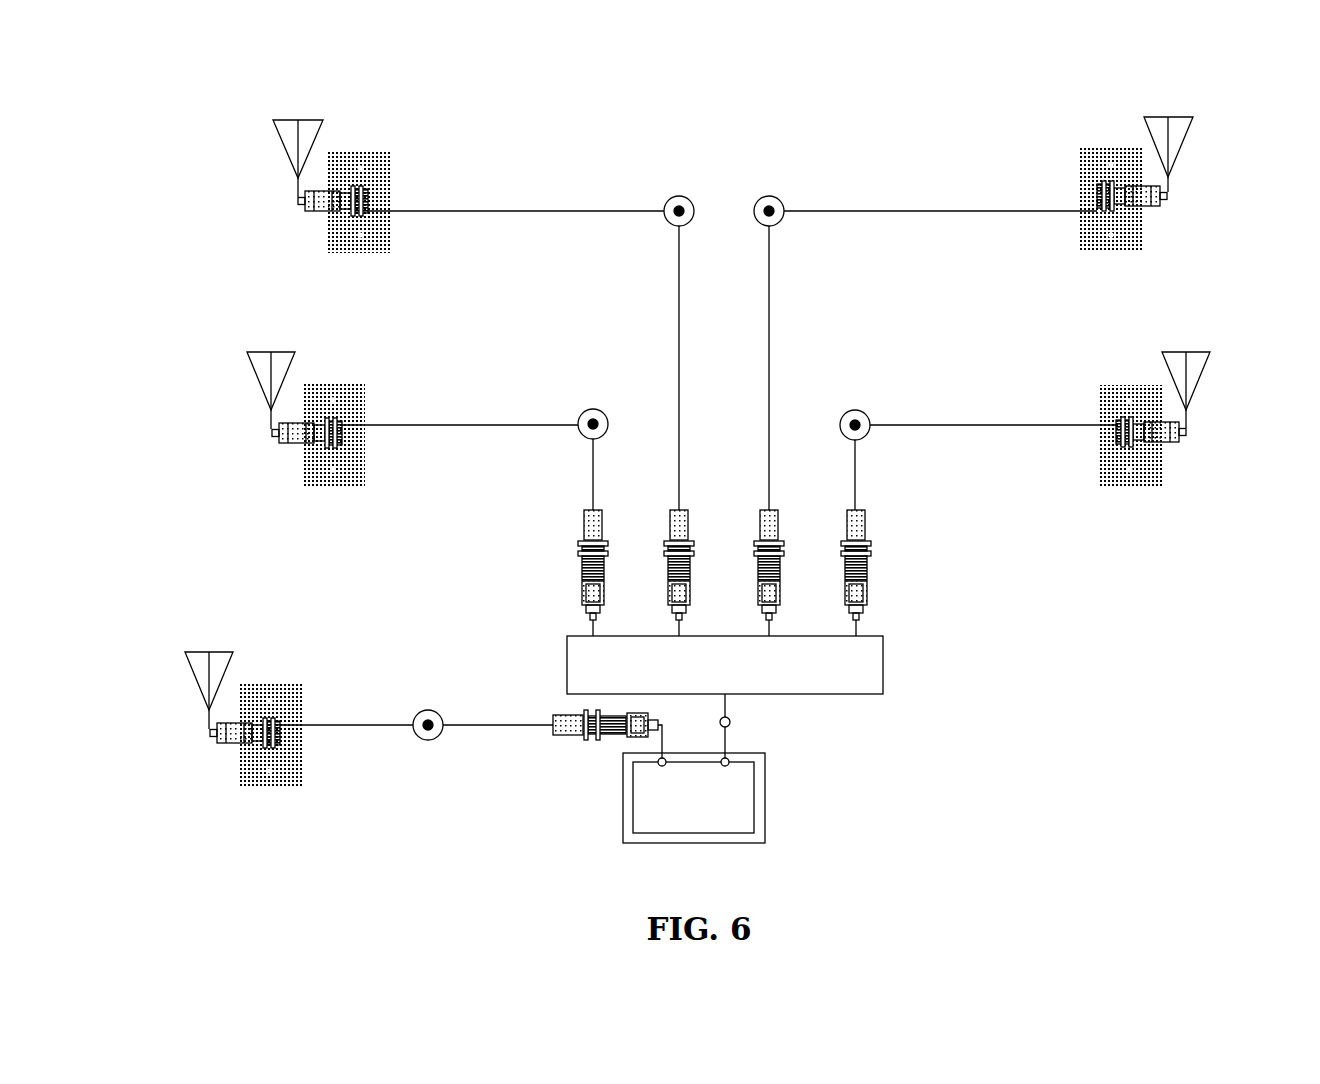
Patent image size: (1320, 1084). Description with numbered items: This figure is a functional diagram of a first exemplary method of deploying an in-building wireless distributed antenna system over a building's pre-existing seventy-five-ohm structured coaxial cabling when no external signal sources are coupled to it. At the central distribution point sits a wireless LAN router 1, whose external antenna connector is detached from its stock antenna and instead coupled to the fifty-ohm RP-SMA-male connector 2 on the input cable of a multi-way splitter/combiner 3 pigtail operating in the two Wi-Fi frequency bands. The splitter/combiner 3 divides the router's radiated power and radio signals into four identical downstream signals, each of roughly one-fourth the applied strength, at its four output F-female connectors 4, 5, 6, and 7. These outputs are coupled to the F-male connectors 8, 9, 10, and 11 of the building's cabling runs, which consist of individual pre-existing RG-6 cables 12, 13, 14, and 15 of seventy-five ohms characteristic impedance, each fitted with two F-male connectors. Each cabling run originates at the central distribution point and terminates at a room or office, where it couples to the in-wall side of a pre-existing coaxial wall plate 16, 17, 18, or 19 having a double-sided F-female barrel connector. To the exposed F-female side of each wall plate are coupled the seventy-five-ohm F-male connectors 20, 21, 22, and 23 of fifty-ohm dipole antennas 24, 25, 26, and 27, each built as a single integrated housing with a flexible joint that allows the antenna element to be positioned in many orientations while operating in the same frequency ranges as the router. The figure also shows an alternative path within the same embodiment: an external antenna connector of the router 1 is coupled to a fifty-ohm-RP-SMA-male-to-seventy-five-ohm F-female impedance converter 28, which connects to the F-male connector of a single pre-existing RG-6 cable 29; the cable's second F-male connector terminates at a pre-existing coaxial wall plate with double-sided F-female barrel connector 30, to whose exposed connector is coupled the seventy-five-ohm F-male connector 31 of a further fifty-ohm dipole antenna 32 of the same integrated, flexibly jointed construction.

The wireless LAN router 1 is at (697, 853).
The RP-SMA-male connector 2 is at (748, 730).
The multi-way splitter/combiner 3 is at (553, 660).
The output F-female connector 4 is at (575, 622).
The output F-female connector 5 is at (665, 622).
The output F-female connector 6 is at (752, 622).
The output F-female connector 7 is at (838, 622).
The F-male connector 8 is at (567, 540).
The F-male connector 9 is at (653, 540).
The F-male connector 10 is at (753, 545).
The F-male connector 11 is at (833, 543).
The RG-6 cable 12 is at (555, 412).
The RG-6 cable 13 is at (640, 190).
The RG-6 cable 14 is at (823, 190).
The RG-6 cable 15 is at (905, 410).
The coaxial wall plate 16 is at (368, 382).
The coaxial wall plate 17 is at (395, 145).
The coaxial wall plate 18 is at (1068, 145).
The coaxial wall plate 19 is at (1088, 392).
The F-male connector 20 is at (280, 460).
The F-male connector 21 is at (310, 225).
The F-male connector 22 is at (1160, 222).
The F-male connector 23 is at (1175, 452).
The dipole antenna 24 is at (258, 338).
The dipole antenna 25 is at (290, 112).
The dipole antenna 26 is at (1200, 110).
The dipole antenna 27 is at (1215, 340).
The impedance converter 28 is at (570, 742).
The RG-6 cable 29 is at (345, 735).
The coaxial wall plate with double-sided F-female barrel connector 30 is at (296, 678).
The F-male connector 31 is at (215, 755).
The dipole antenna 32 is at (190, 638).